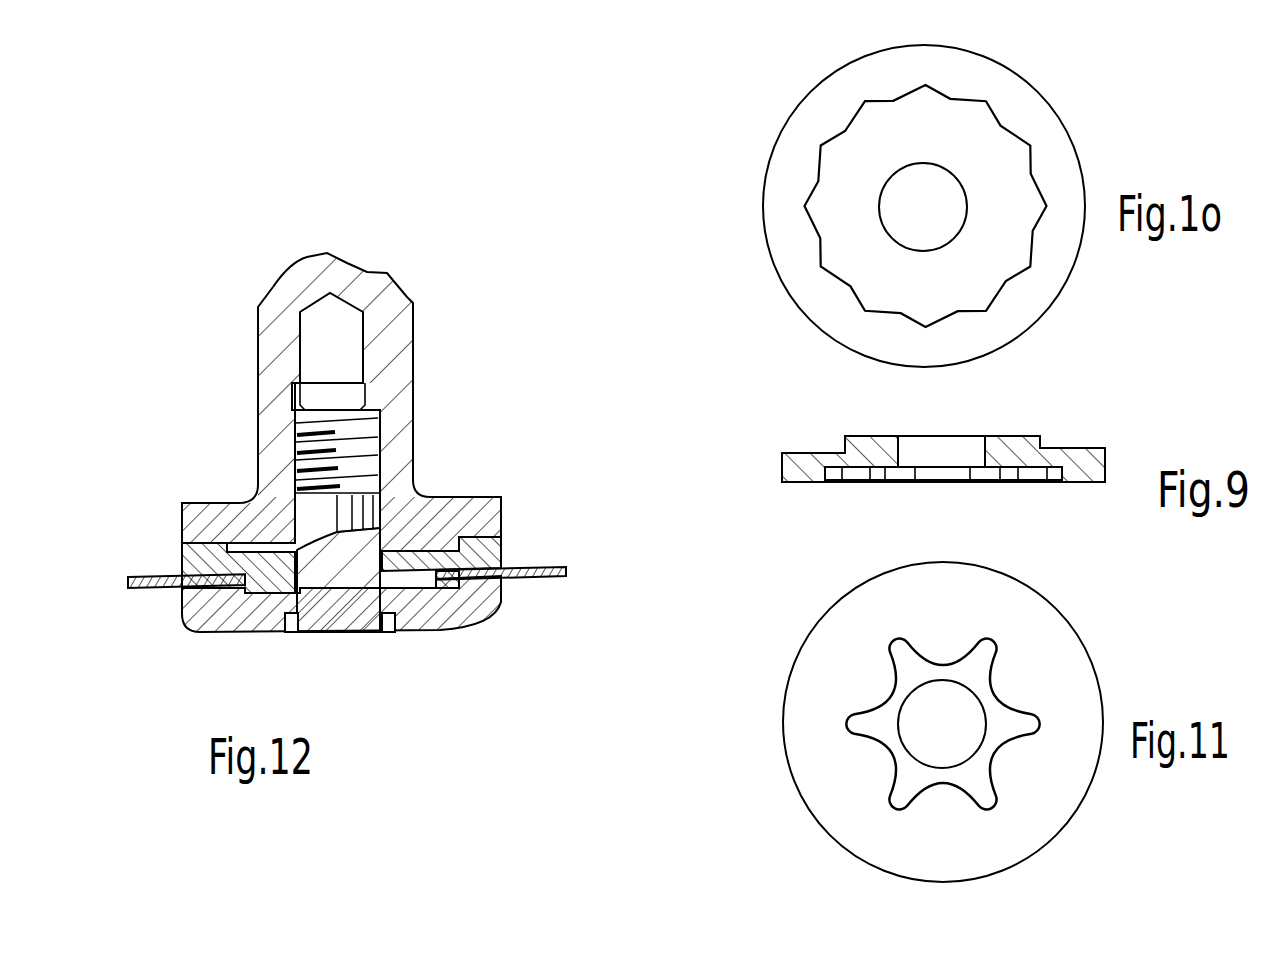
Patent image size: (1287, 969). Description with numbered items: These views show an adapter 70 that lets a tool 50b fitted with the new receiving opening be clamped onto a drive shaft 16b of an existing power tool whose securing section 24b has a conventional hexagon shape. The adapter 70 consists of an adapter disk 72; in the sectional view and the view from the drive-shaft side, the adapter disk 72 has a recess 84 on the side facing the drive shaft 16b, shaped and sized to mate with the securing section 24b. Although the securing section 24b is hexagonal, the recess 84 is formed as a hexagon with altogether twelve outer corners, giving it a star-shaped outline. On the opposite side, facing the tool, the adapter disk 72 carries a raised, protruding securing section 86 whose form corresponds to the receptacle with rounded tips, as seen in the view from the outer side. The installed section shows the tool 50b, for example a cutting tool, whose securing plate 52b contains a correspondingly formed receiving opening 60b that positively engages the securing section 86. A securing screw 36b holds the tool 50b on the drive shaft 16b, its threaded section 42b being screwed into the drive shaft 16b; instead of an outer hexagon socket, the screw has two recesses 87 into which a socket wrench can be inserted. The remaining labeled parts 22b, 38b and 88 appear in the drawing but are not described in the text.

In FIG. 12, the adapter 70 is at (161, 554).
In FIG. 10, the adapter 70 is at (762, 141).
In FIG. 9, the adapter 70 is at (1078, 434).
In FIG. 12, the adapter disk 72 is at (501, 541).
In FIG. 10, the adapter disk 72 is at (1047, 140).
In FIG. 9, the adapter disk 72 is at (1103, 452).
In FIG. 11, the adapter disk 72 is at (1057, 788).
In FIG. 12, the recess 84 is at (440, 620).
In FIG. 10, the recess 84 is at (968, 120).
In FIG. 9, the recess 84 is at (1033, 473).
In FIG. 12, the securing section 86 is at (223, 630).
In FIG. 9, the securing section 86 is at (1032, 437).
In FIG. 11, the securing section 86 is at (1002, 723).
In FIG. 10, the central opening 88 is at (897, 210).
In FIG. 11, the central opening 88 is at (923, 737).
In FIG. 12, the drive shaft 16b is at (408, 329).
In FIG. 12, the flange 22b is at (193, 520).
In FIG. 12, the securing section 24b is at (499, 497).
In FIG. 12, the threaded section 42b is at (367, 440).
In FIG. 12, the receiving opening 60b is at (425, 540).
In FIG. 12, the tool 50b is at (578, 561).
In FIG. 12, the securing plate 52b is at (558, 578).
In FIG. 12, the securing screw 36b is at (497, 618).
In FIG. 12, the core 38b is at (347, 617).
In FIG. 12, the recesses 87 is at (402, 630).